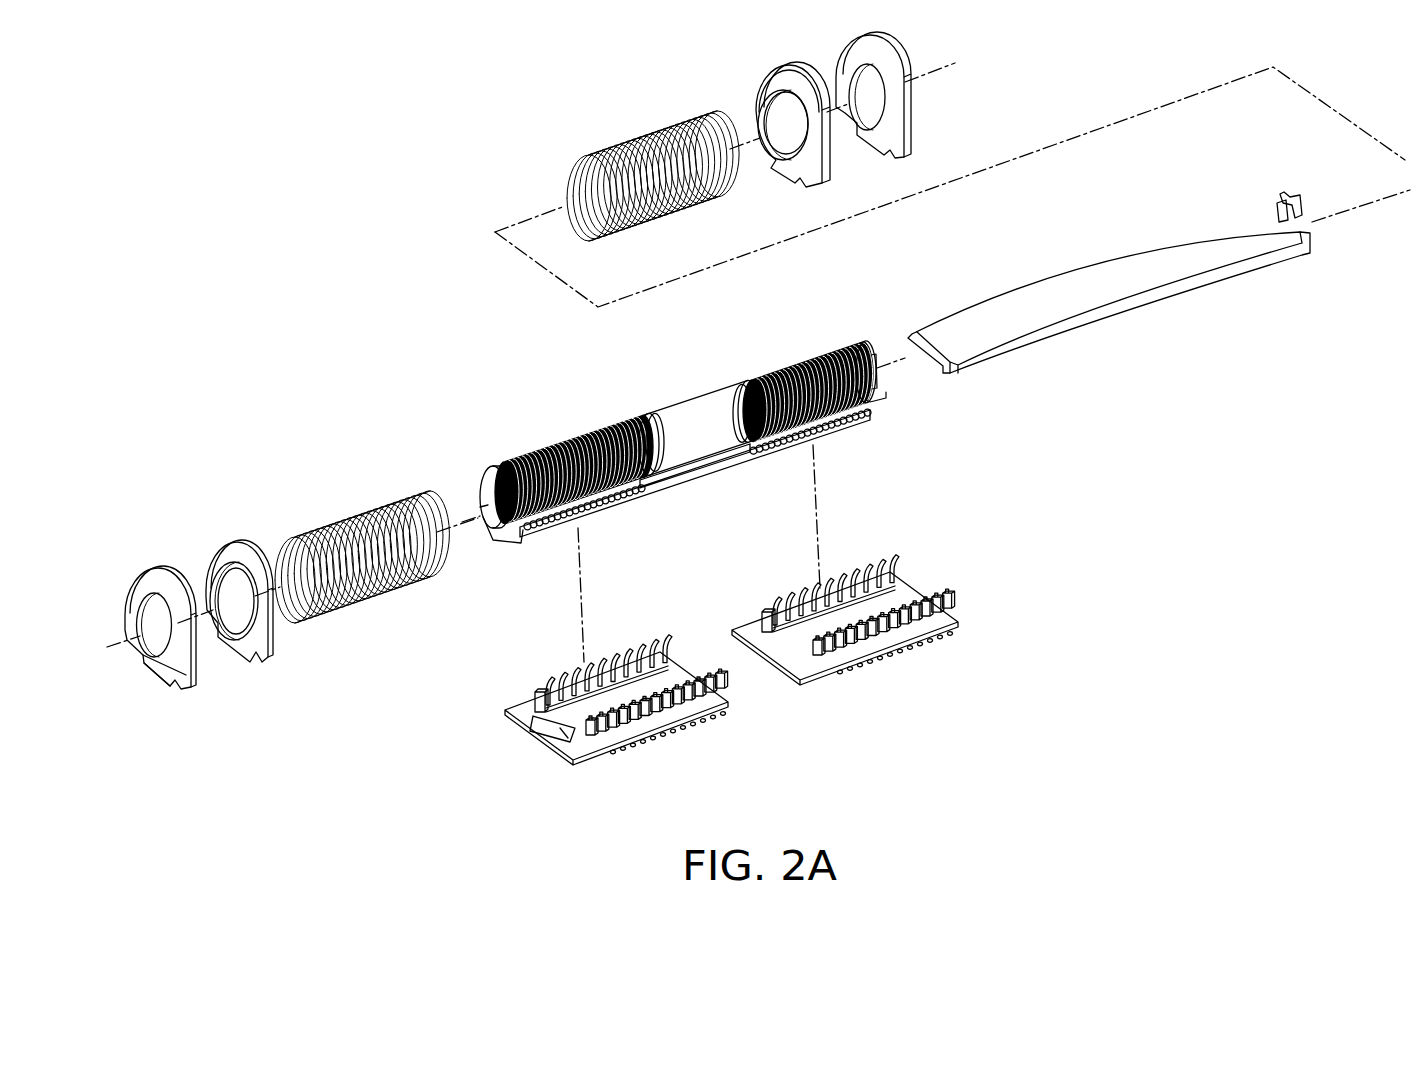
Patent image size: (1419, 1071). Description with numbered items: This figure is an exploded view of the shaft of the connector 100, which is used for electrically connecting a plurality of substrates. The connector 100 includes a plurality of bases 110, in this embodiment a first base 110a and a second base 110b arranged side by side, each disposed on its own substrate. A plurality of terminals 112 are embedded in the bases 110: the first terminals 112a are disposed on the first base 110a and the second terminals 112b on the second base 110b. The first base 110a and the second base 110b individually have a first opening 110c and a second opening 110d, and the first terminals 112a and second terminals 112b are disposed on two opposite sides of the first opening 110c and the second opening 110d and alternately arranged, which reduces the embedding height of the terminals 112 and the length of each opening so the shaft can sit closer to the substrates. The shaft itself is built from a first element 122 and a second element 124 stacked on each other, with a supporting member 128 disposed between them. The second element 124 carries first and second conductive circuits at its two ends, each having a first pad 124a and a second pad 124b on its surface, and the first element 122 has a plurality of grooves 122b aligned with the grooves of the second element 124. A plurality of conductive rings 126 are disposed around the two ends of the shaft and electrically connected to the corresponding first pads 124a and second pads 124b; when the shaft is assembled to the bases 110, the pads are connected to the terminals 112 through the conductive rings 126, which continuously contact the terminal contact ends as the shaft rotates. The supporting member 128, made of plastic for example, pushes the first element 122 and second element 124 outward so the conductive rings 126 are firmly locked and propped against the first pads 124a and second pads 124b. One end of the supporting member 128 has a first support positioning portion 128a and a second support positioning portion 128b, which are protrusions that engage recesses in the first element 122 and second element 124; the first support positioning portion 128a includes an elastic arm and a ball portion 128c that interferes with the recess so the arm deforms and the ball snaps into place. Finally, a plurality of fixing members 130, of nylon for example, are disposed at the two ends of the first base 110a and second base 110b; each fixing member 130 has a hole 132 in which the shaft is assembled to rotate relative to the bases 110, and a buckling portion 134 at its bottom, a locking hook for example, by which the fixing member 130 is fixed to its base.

The connector 100 is at (210, 153).
The bases 110 is at (855, 741).
The first base 110a is at (815, 683).
The second base 110b is at (587, 763).
The first opening 110c is at (893, 588).
The second opening 110d is at (550, 727).
The terminals 112 is at (753, 535).
The first terminals 112a is at (816, 588).
The second terminals 112b is at (645, 640).
The first element 122 is at (727, 468).
The grooves 122b is at (540, 548).
The second element 124 is at (673, 410).
The first pad 124a is at (785, 356).
The second pad 124b is at (553, 441).
The conductive rings 126 is at (633, 144).
The supporting member 128 is at (1108, 270).
The first support positioning portion 128a is at (1313, 126).
The second support positioning portion 128b is at (1277, 216).
The ball portion 128c is at (1272, 199).
The fixing members 130 is at (134, 578).
The hole 132 is at (149, 643).
The buckling portion 134 is at (164, 690).